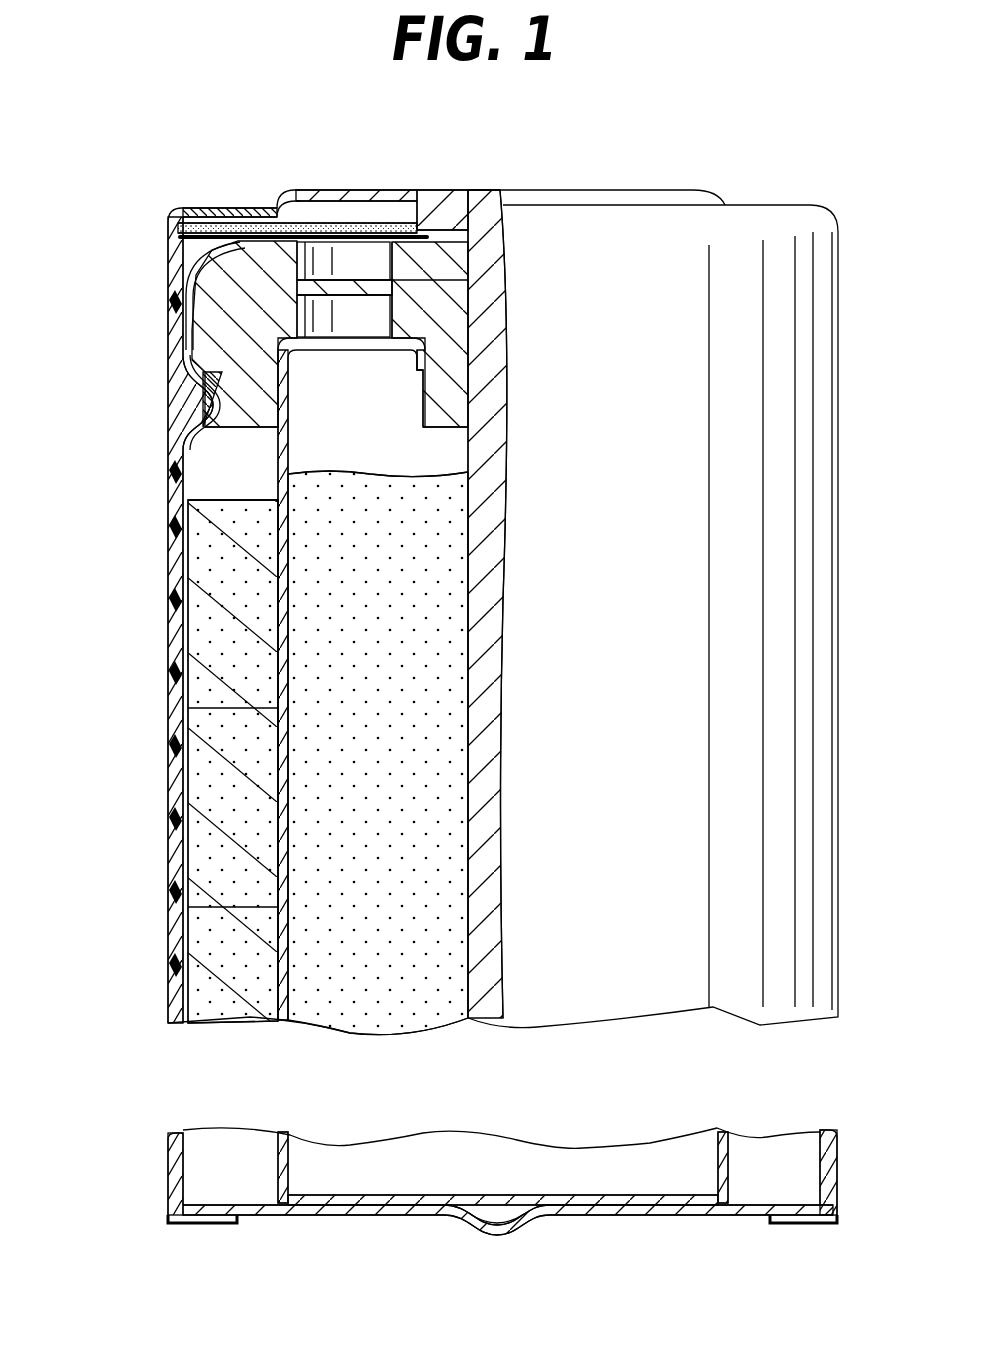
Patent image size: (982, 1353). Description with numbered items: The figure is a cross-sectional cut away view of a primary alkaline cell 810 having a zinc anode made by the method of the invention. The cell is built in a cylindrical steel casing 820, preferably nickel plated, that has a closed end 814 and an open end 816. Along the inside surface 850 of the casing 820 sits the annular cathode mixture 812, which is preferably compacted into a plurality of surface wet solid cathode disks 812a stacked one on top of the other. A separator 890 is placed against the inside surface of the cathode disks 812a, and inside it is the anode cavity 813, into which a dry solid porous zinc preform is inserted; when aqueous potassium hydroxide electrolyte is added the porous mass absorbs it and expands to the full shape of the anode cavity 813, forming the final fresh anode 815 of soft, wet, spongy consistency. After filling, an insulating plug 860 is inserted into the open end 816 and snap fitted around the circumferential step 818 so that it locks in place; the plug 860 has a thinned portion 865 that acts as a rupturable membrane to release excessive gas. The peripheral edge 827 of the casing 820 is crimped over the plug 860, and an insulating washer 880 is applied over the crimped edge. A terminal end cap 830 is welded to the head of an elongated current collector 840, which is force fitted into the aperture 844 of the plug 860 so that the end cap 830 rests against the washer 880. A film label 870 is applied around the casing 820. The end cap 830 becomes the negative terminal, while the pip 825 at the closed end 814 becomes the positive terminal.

The alkaline cell 810 is at (138, 357).
The cathode mixture 812 is at (207, 635).
The cathode disks 812a is at (203, 688).
The anode cavity 813 is at (397, 454).
The closed end 814 is at (337, 1217).
The anode 815 is at (430, 995).
The open end 816 is at (281, 197).
The circumferential step 818 is at (180, 383).
The casing 820 is at (178, 588).
The pip 825 is at (510, 1234).
The peripheral edge 827 is at (220, 226).
The terminal end cap 830 is at (365, 188).
The current collector 840 is at (455, 205).
The aperture 844 is at (472, 258).
The inside surface 850 is at (178, 528).
The insulating plug 860 is at (243, 253).
The thinned portion 865 is at (350, 300).
The film label 870 is at (167, 300).
The insulating washer 880 is at (167, 237).
The separator 890 is at (283, 1000).